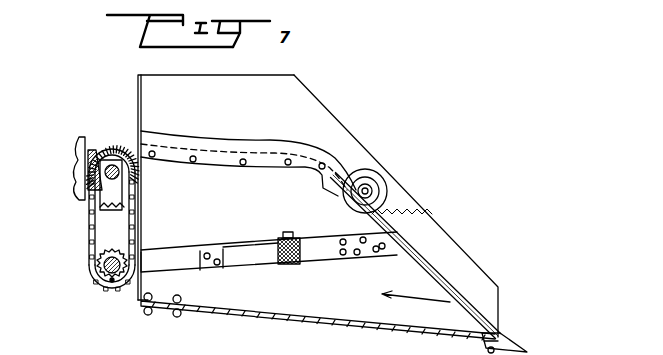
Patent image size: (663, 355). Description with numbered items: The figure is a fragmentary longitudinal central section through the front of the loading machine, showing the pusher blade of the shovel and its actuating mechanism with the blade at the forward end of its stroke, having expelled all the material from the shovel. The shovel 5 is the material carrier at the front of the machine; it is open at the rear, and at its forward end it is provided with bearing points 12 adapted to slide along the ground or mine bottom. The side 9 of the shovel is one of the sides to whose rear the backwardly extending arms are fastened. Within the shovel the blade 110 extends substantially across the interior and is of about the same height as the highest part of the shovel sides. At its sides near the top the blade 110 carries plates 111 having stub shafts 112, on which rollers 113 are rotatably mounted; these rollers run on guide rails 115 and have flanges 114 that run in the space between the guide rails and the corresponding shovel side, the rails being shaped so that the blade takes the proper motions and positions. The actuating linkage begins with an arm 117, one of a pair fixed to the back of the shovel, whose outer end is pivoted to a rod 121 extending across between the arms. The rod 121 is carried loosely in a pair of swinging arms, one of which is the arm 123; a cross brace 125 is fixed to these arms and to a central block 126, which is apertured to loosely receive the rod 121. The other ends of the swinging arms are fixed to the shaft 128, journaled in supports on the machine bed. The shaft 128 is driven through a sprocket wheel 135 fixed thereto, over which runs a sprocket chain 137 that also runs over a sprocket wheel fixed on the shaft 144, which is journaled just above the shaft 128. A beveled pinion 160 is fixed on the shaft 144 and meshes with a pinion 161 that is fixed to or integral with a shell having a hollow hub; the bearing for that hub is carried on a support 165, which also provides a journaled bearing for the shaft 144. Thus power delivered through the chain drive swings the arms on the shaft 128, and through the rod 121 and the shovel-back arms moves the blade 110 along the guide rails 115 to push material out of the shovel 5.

The shovel 5 is at (346, 130).
The side of the shovel 9 is at (233, 92).
The bearing points 12 is at (508, 343).
The blade 110 is at (432, 268).
The plates 111 is at (380, 199).
The stub shafts 112 is at (372, 191).
The rollers 113 is at (376, 184).
The flanges 114 is at (366, 172).
The guide rails 115 is at (280, 138).
The arm 117 is at (326, 255).
The rod 121 is at (308, 245).
The arm 123 is at (240, 264).
The cross brace 125 is at (258, 218).
The central block 126 is at (276, 264).
The shaft 128 is at (104, 262).
The sprocket wheel 135 is at (104, 280).
The sprocket chain 137 is at (90, 238).
The shaft 144 is at (88, 200).
The beveled pinion 160 is at (119, 148).
The pinion 161 is at (105, 152).
The support 165 is at (115, 199).